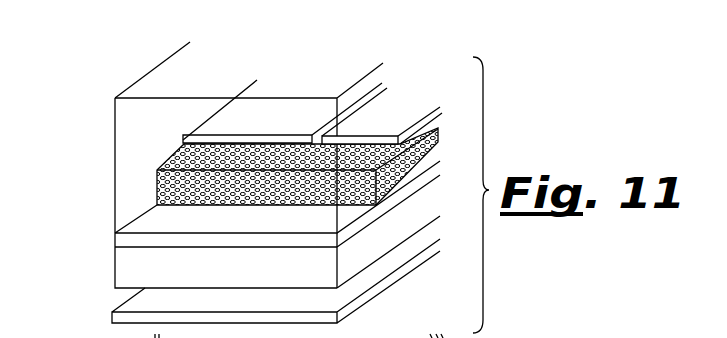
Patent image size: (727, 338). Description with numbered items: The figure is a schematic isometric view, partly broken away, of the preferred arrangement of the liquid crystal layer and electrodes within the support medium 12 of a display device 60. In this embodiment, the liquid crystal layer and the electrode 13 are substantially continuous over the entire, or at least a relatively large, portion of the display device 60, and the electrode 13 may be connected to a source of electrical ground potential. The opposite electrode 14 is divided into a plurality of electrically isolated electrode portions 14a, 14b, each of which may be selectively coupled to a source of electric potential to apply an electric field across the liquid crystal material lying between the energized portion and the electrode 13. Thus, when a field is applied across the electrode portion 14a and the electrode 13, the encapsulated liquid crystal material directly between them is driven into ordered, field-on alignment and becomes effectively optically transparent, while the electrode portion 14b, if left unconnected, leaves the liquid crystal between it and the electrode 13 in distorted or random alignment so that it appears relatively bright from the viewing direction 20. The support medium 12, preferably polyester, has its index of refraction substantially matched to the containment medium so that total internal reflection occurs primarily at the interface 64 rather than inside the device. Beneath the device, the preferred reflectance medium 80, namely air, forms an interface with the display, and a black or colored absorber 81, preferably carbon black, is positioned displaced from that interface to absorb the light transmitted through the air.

The viewing direction 20 is at (249, 150).
The interface 64 is at (164, 78).
The display device 60 is at (322, 55).
The support medium 12 is at (127, 143).
The electrode 13 is at (372, 214).
The electrode 14 is at (172, 143).
The electrode portion 14a is at (215, 126).
The electrode portion 14b is at (407, 110).
The reflectance medium 80 is at (380, 276).
The absorber 81 is at (372, 295).